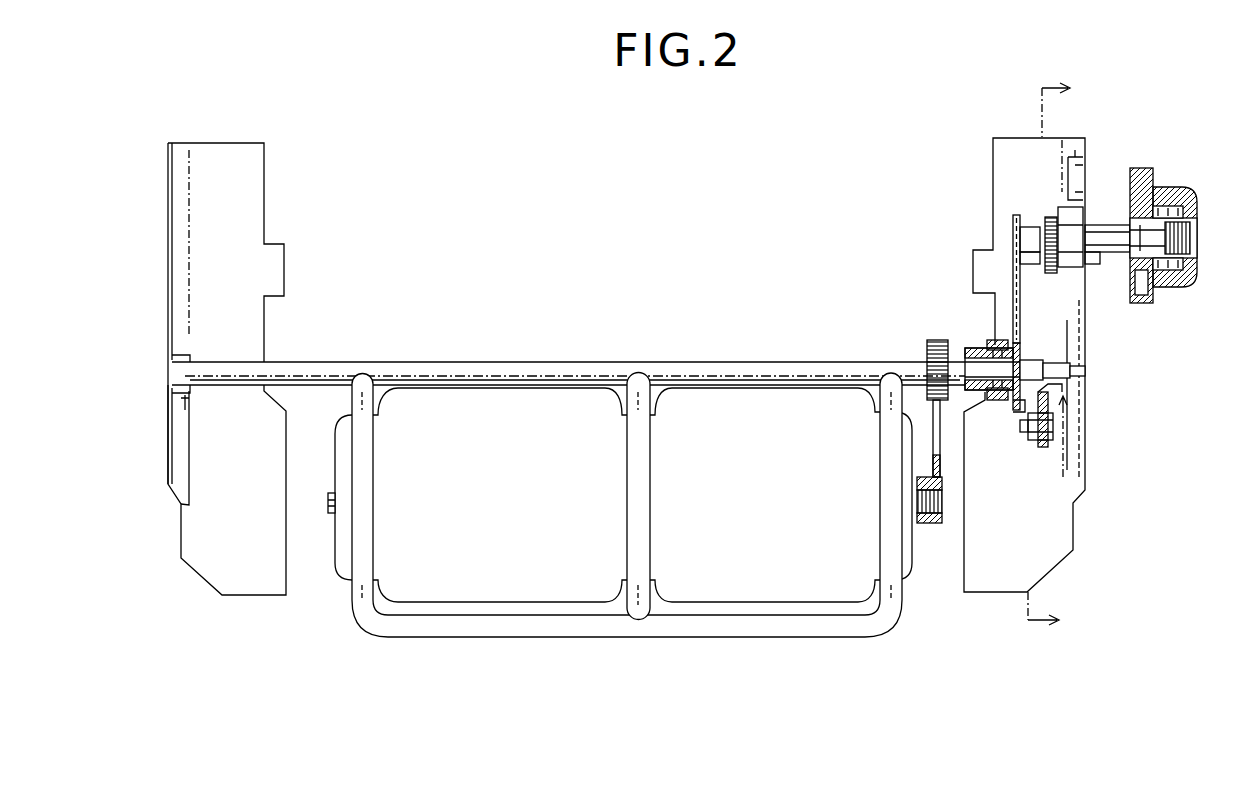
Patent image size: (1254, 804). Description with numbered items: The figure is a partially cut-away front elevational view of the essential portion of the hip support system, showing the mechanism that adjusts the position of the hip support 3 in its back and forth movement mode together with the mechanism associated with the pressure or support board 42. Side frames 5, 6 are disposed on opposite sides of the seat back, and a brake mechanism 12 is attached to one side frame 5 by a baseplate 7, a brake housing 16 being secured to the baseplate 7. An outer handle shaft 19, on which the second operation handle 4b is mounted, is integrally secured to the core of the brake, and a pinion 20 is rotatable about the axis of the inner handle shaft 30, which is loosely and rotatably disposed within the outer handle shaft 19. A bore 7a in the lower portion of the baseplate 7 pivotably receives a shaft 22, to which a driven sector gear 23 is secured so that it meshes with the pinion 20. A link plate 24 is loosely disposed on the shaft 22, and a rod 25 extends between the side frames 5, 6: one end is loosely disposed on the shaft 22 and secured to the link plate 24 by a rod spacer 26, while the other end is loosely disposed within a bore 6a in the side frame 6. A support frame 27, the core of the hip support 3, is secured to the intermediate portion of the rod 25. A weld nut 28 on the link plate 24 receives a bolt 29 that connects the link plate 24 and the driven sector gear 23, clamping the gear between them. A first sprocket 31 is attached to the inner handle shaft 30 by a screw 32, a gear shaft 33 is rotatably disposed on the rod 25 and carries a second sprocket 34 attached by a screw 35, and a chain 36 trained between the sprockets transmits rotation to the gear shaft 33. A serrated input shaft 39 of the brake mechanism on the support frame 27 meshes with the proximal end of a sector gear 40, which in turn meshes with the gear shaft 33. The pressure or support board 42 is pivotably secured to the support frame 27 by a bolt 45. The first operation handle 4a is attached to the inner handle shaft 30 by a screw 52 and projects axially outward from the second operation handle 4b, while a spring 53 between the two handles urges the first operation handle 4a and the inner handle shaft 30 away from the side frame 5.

The hip support 3 is at (1061, 356).
The first operation handle 4a is at (1188, 190).
The second operation handle 4b is at (1153, 172).
The side frame 5 is at (1048, 148).
The side frame 6 is at (257, 186).
The bore 6a is at (168, 392).
The baseplate 7 is at (1080, 180).
The bore 7a is at (1052, 398).
The brake mechanism 12 is at (1135, 277).
The brake housing 16 is at (1092, 262).
The outer handle shaft 19 is at (1098, 225).
The pinion 20 is at (1048, 215).
The shaft 22 is at (1075, 375).
The driven sector gear 23 is at (1045, 283).
The link plate 24 is at (1048, 435).
The rod 25 is at (567, 367).
The rod spacer 26 is at (988, 350).
The support frame 27 is at (638, 617).
The weld nut 28 is at (1035, 435).
The bolt 29 is at (1058, 418).
The inner handle shaft 30 is at (1182, 262).
The first sprocket 31 is at (1025, 232).
The screw 32 is at (1030, 238).
The gear shaft 33 is at (926, 350).
The second sprocket 34 is at (1000, 342).
The screw 35 is at (1030, 440).
The chain 36 is at (1012, 255).
The input shaft 39 is at (917, 522).
The sector gear 40 is at (946, 480).
The pressure or support board 42 is at (475, 593).
The bolt 45 is at (330, 513).
The screw 52 is at (1197, 238).
The spring 53 is at (1185, 282).